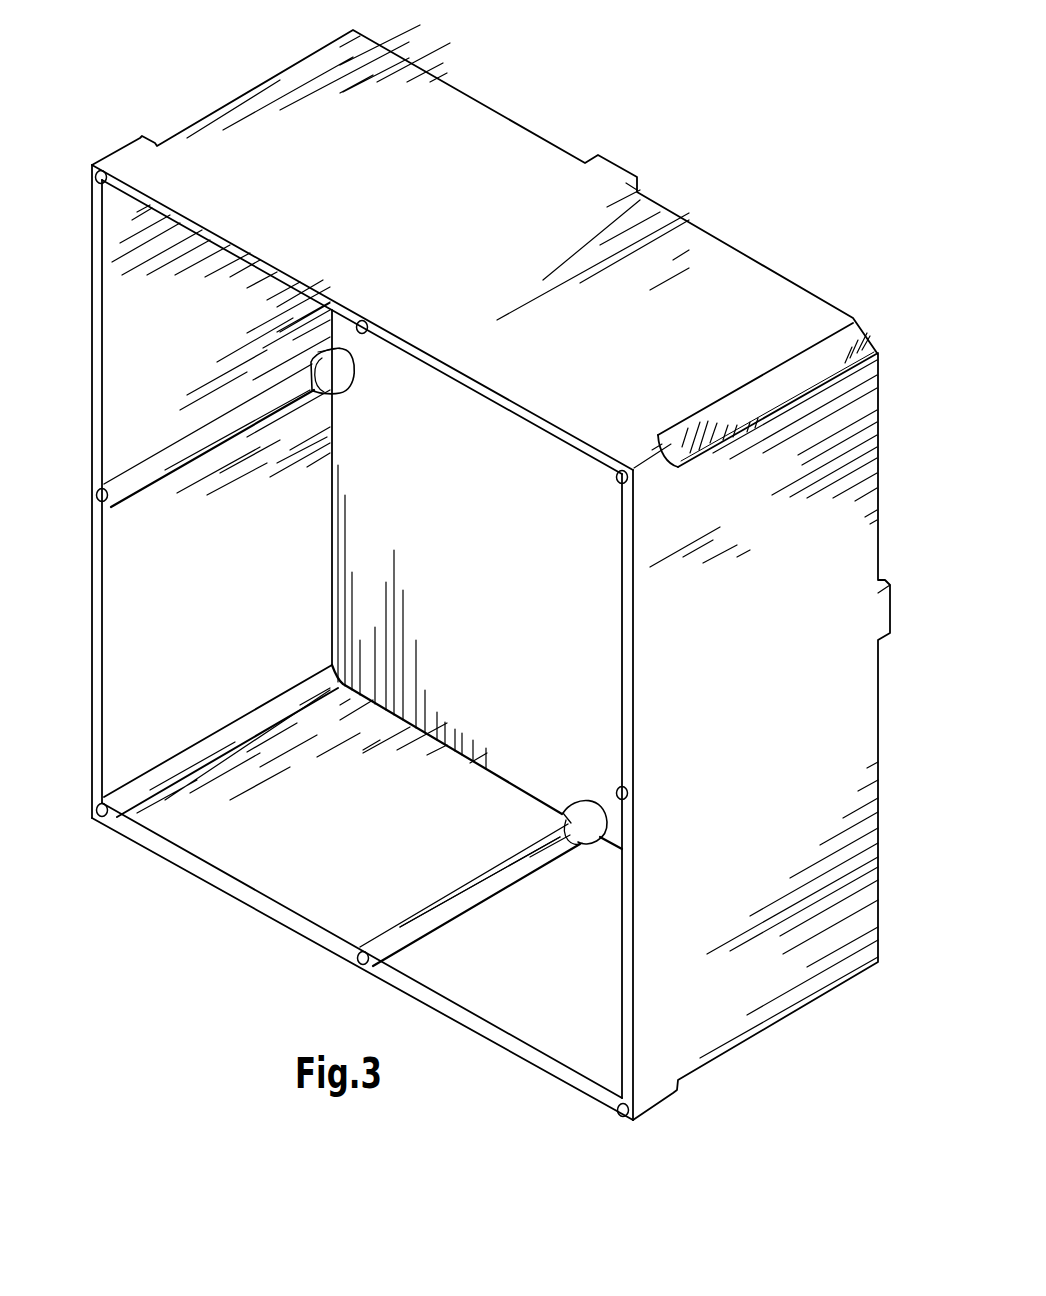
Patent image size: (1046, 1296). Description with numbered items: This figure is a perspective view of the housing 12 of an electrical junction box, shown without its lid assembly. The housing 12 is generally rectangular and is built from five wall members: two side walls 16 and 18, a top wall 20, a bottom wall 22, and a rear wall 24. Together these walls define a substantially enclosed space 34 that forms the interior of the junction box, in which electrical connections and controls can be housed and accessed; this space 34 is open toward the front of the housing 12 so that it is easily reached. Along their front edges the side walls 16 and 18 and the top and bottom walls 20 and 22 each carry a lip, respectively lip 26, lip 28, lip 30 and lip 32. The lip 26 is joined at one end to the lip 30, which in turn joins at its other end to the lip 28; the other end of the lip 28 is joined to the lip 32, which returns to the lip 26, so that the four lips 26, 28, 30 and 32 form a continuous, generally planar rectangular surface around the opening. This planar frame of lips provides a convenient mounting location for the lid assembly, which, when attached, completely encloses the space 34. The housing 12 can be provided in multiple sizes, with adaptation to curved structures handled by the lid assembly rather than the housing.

The housing 12 is at (726, 124).
The side wall 16 is at (118, 403).
The side wall 18 is at (830, 713).
The top wall 20 is at (487, 127).
The bottom wall 22 is at (302, 892).
The rear wall 24 is at (518, 480).
The lip 26 is at (101, 641).
The lip 28 is at (627, 697).
The lip 30 is at (413, 352).
The lip 32 is at (182, 862).
The enclosed space 34 is at (517, 634).